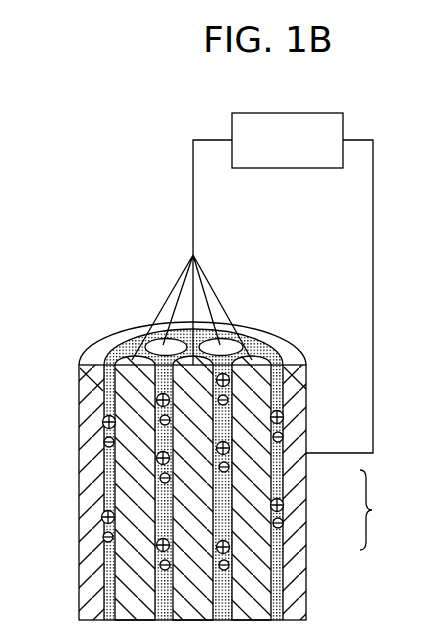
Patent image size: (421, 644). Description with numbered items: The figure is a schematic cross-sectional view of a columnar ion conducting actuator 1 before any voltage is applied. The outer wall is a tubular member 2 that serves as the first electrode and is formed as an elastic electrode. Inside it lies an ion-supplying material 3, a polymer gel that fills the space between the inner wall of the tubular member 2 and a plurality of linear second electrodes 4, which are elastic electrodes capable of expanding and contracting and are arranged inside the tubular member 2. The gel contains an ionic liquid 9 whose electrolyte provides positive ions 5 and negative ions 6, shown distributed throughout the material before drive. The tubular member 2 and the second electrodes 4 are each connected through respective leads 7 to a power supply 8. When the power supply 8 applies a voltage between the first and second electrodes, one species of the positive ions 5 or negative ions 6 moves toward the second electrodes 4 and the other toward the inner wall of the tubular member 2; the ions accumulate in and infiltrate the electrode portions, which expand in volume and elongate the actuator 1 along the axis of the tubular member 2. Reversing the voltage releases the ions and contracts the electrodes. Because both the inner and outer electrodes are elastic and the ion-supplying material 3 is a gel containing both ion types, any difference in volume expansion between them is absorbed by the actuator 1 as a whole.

The actuator 1 is at (273, 315).
The tubular member 2 is at (293, 590).
The ion-supplying material 3 is at (95, 335).
The linear second electrodes 4 is at (122, 337).
The positive ions 5 is at (288, 493).
The negative ions 6 is at (289, 528).
The leads 7 is at (192, 210).
The power supply 8 is at (318, 113).
The ionic liquid 9 is at (374, 510).